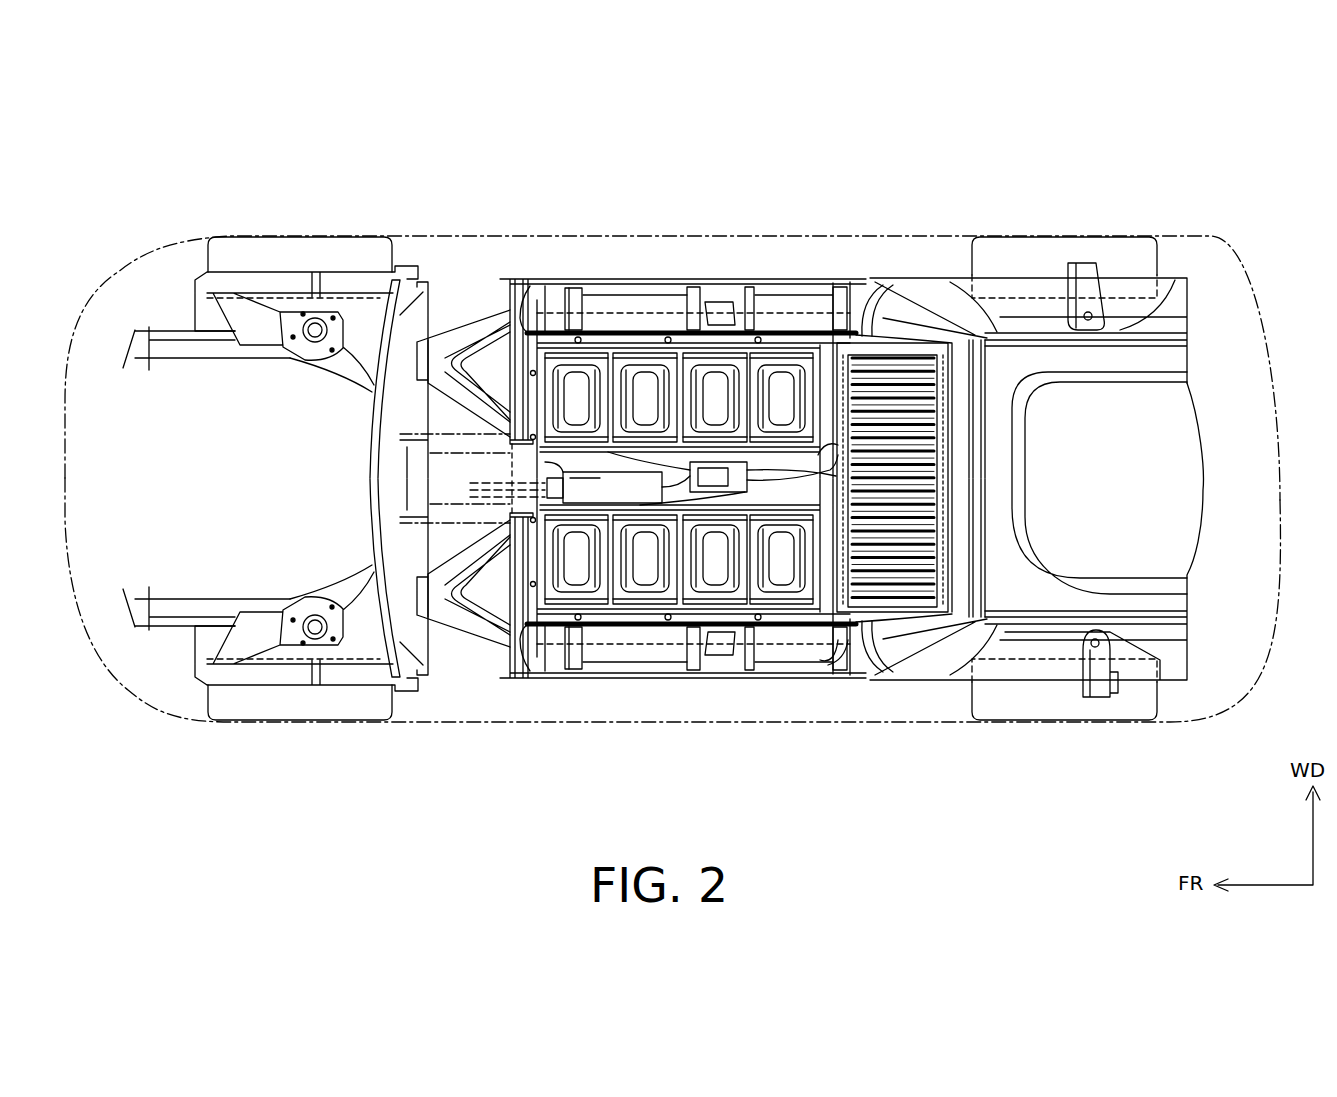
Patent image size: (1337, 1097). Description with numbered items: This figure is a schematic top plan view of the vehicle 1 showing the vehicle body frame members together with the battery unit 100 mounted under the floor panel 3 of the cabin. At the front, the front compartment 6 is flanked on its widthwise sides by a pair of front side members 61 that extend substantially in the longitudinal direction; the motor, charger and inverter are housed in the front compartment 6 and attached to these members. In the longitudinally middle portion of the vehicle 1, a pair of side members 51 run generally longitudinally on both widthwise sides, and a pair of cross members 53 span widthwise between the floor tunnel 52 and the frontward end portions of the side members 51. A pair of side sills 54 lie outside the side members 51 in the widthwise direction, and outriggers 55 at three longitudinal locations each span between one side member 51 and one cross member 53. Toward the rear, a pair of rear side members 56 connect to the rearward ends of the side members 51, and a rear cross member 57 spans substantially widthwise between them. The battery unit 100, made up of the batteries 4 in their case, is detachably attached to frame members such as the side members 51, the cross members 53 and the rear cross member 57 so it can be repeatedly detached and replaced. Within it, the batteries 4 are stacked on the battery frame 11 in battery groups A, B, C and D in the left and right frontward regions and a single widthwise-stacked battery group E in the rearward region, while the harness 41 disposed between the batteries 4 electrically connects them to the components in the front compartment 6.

The vehicle 1 is at (1228, 236).
The floor panel 3 is at (478, 345).
The batteries 4 is at (796, 487).
The front compartment 6 is at (180, 494).
The battery frame 11 is at (830, 664).
The harness 41 is at (470, 486).
The side members 51 is at (700, 330).
The floor tunnel 52 is at (460, 522).
The cross members 53 is at (513, 280).
The side sills 54 is at (541, 282).
The outriggers 55 is at (577, 287).
The rear side members 56 is at (1176, 330).
The rear cross member 57 is at (995, 333).
The front side members 61 is at (170, 345).
The battery unit 100 is at (820, 332).
The battery group A is at (606, 343).
The battery group B is at (659, 343).
The battery group C is at (746, 343).
The battery group D is at (806, 343).
The battery group E is at (911, 340).